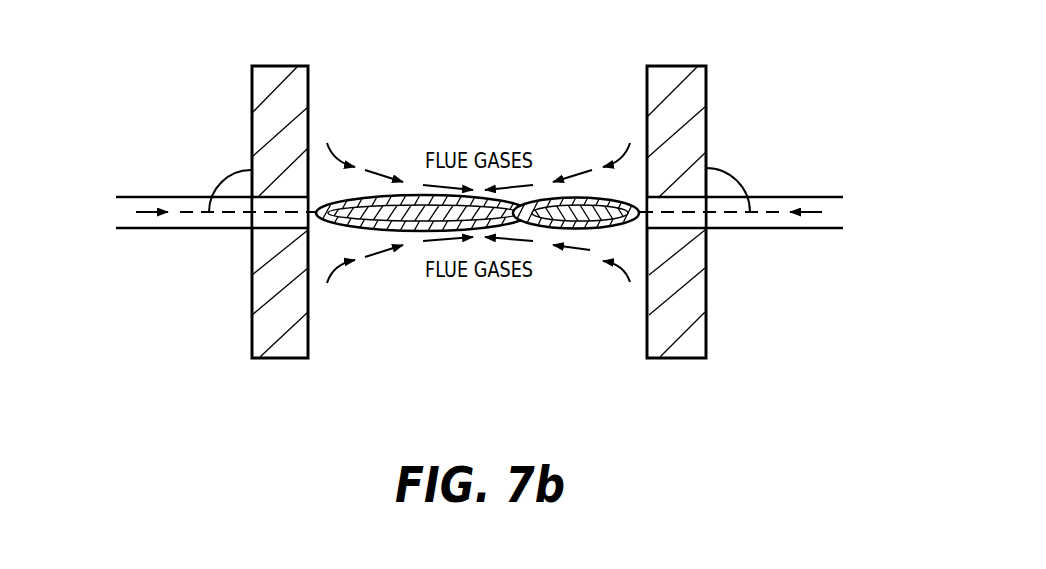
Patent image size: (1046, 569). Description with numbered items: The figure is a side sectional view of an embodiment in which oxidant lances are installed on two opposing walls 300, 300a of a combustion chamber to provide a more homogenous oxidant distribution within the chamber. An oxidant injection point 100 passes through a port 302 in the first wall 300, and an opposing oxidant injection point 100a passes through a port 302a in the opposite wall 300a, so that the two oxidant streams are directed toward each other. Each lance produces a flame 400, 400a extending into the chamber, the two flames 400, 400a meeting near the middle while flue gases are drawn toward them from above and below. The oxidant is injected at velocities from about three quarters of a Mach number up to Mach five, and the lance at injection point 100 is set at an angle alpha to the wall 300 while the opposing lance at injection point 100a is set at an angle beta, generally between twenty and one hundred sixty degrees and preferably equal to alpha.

The injection point 100 is at (127, 197).
The injection point 100a is at (800, 229).
The furnace wall 300 is at (272, 90).
The opposing furnace wall 300a is at (685, 88).
The port in furnace wall 302 is at (308, 75).
The port in opposing furnace wall 302a is at (647, 78).
The flame 400 is at (355, 225).
The opposing flame 400a is at (587, 227).